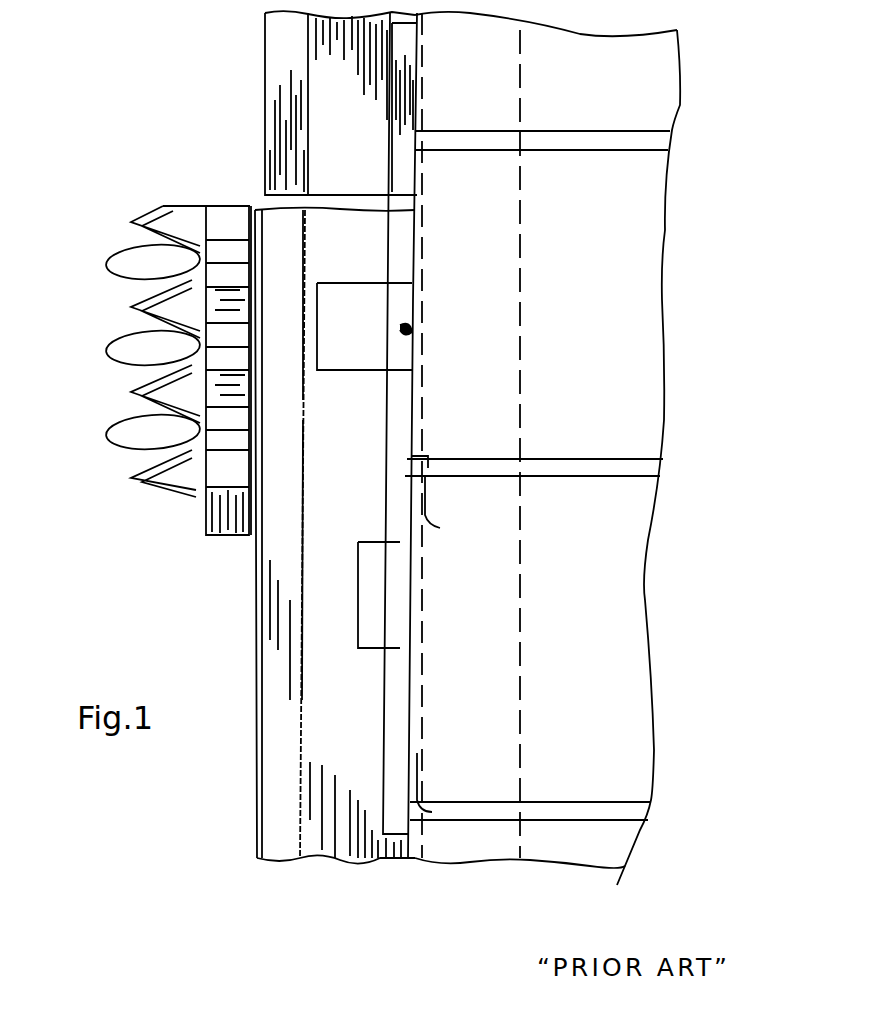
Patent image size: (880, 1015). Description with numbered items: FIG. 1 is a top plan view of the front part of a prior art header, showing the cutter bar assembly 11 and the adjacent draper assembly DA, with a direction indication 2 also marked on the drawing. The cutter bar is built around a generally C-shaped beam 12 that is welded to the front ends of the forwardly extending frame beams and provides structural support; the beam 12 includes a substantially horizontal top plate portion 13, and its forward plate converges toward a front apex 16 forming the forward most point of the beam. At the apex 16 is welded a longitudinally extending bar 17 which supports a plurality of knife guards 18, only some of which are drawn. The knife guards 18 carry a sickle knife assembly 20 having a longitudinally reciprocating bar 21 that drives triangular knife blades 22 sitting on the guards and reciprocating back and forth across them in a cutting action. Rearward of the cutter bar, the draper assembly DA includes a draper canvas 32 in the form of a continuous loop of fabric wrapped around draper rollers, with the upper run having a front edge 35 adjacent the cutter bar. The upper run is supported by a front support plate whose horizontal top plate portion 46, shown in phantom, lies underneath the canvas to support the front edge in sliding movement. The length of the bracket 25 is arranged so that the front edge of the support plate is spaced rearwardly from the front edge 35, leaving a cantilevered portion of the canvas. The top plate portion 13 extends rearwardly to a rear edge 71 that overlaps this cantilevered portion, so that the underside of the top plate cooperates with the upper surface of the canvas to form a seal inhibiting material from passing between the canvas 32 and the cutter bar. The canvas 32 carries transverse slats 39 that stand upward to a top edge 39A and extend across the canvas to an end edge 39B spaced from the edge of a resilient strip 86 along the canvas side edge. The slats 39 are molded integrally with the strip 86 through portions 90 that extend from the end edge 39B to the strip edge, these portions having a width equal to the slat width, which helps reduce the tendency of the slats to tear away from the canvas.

The conveyor belt / panel 2 is at (622, 383).
The cutter bar assembly 11 is at (305, 798).
The C-shaped beam 12 is at (333, 836).
The top plate portion 13 is at (355, 850).
The front apex 16 is at (300, 835).
The longitudinally extending bar 17 is at (272, 680).
The knife guards 18 is at (147, 263).
The sickle knife assembly 20 is at (165, 512).
The longitudinally reciprocating bar 21 is at (207, 513).
The triangular knife blades 22 is at (158, 394).
The bracket 25 is at (364, 276).
The draper canvas 32 is at (390, 125).
The front edge 35 is at (392, 169).
The transverse slats 39 is at (512, 470).
The top edge 39A is at (610, 812).
The end edge 39B is at (430, 814).
The horizontal top plate portion 46 is at (498, 592).
The rear edge 71 is at (413, 383).
The strip 86 is at (400, 667).
The portions 90 is at (435, 634).
The draper assembly DA is at (434, 446).